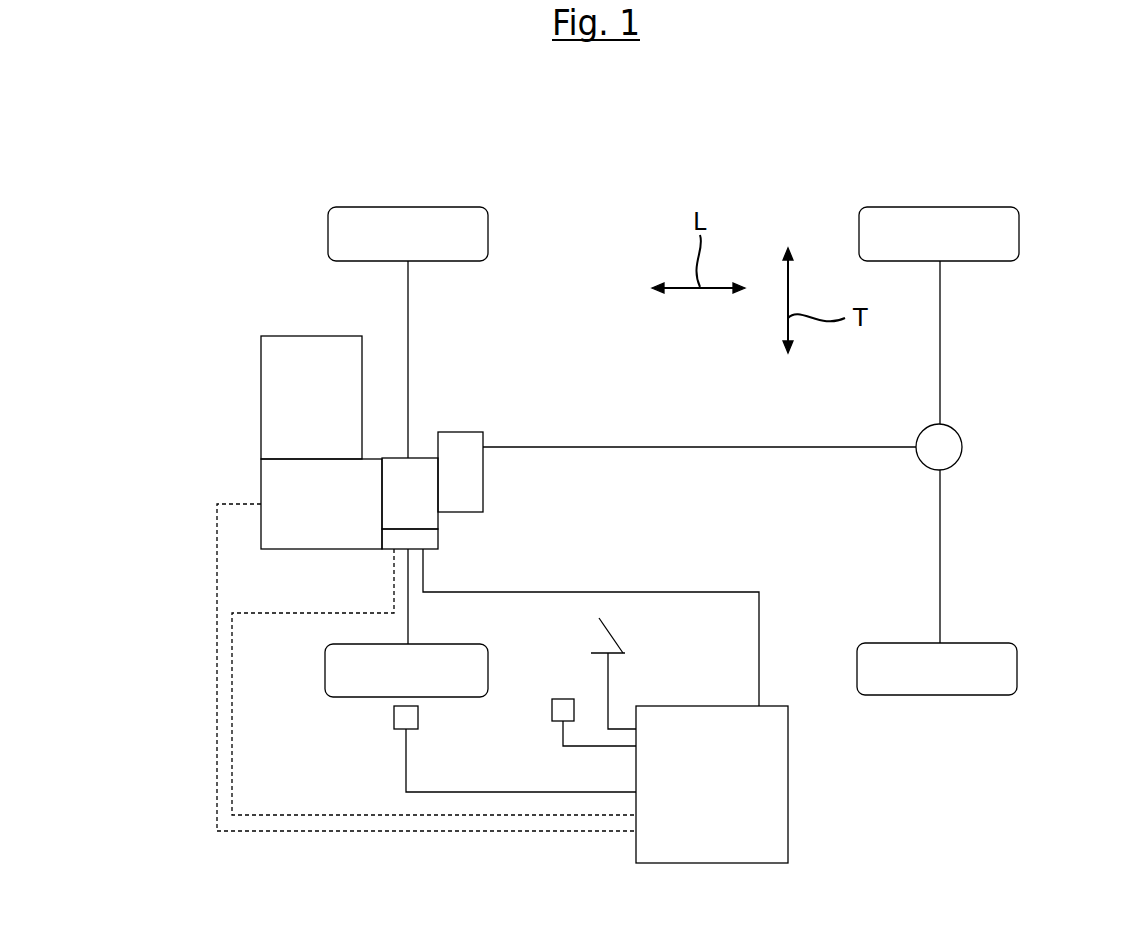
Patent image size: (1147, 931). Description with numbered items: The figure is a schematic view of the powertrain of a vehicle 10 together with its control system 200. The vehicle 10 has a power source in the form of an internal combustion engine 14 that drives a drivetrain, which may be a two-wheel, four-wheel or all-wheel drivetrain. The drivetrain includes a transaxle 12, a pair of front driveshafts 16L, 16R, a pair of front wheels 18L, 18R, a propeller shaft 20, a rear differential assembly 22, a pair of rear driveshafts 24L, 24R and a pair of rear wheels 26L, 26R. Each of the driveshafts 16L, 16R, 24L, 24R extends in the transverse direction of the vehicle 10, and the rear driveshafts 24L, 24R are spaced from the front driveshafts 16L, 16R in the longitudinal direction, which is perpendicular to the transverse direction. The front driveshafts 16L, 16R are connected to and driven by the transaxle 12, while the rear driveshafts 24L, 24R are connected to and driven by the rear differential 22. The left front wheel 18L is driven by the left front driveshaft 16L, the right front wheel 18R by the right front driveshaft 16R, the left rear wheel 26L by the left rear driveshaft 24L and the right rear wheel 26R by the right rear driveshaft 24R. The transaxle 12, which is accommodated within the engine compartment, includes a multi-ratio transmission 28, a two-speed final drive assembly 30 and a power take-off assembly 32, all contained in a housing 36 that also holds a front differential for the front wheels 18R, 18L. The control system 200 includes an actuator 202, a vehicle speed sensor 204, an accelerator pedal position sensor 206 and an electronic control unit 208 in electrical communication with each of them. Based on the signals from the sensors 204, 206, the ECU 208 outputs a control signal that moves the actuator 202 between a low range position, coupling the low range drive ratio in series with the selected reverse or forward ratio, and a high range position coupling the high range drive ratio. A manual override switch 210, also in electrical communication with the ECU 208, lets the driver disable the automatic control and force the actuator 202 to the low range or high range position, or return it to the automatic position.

The vehicle 10 is at (150, 437).
The transaxle 12 is at (225, 490).
The internal combustion engine 14 is at (261, 356).
The right front driveshaft 16R is at (408, 320).
The left front driveshaft 16L is at (408, 628).
The right front wheel 18R is at (488, 228).
The left front wheel 18L is at (325, 675).
The propeller shaft 20 is at (680, 447).
The rear differential assembly 22 is at (960, 443).
The right rear driveshaft 24R is at (940, 336).
The left rear driveshaft 24L is at (940, 549).
The right rear wheel 26R is at (1019, 233).
The left rear wheel 26L is at (1017, 665).
The multi-ratio transmission 28 is at (327, 520).
The two-speed final drive assembly 30 is at (397, 470).
The power take-off assembly 32 is at (470, 485).
The housing 36 is at (420, 455).
The control system 200 is at (608, 706).
The actuator 202 is at (427, 545).
The vehicle speed sensor 204 is at (394, 718).
The accelerator pedal position sensor 206 is at (612, 632).
The electronic control unit 208 is at (733, 745).
The manual override switch 210 is at (552, 710).